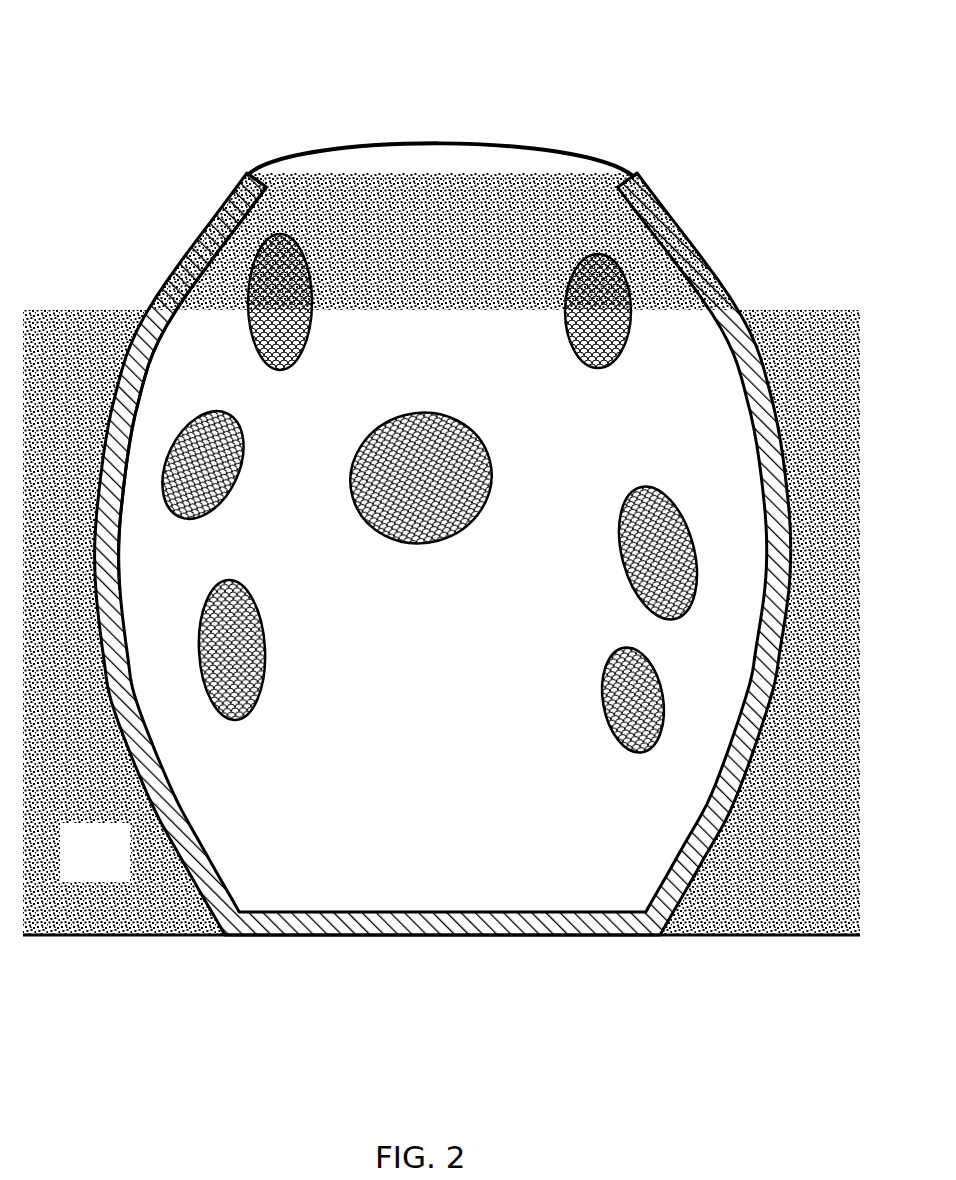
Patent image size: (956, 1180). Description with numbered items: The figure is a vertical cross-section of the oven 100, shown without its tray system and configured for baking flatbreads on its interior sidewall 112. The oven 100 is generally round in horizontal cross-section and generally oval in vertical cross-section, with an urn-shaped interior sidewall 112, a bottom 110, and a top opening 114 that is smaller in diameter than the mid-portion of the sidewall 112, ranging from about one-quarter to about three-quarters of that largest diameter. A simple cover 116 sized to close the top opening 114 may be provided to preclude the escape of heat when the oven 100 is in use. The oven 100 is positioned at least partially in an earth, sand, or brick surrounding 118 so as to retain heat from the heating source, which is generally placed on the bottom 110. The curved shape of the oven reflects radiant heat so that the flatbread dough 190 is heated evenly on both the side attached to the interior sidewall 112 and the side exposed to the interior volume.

The oven 100 is at (236, 105).
The bottom 110 is at (501, 911).
The interior sidewall 112 is at (122, 589).
The top opening 114 is at (272, 192).
The cover 116 is at (552, 146).
The surrounding 118 is at (110, 862).
The flatbread dough 190 is at (438, 415).